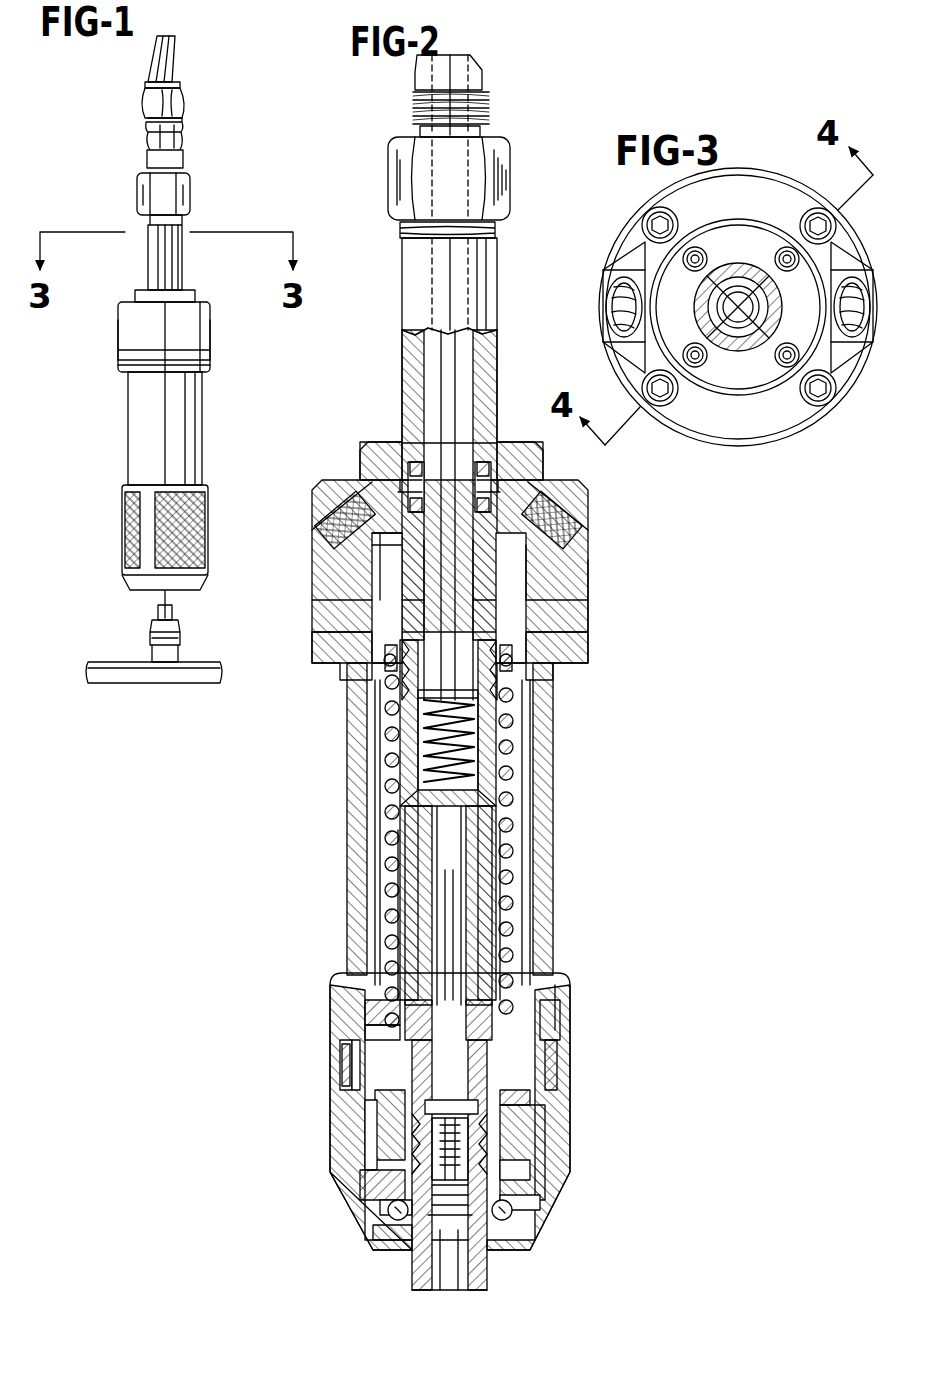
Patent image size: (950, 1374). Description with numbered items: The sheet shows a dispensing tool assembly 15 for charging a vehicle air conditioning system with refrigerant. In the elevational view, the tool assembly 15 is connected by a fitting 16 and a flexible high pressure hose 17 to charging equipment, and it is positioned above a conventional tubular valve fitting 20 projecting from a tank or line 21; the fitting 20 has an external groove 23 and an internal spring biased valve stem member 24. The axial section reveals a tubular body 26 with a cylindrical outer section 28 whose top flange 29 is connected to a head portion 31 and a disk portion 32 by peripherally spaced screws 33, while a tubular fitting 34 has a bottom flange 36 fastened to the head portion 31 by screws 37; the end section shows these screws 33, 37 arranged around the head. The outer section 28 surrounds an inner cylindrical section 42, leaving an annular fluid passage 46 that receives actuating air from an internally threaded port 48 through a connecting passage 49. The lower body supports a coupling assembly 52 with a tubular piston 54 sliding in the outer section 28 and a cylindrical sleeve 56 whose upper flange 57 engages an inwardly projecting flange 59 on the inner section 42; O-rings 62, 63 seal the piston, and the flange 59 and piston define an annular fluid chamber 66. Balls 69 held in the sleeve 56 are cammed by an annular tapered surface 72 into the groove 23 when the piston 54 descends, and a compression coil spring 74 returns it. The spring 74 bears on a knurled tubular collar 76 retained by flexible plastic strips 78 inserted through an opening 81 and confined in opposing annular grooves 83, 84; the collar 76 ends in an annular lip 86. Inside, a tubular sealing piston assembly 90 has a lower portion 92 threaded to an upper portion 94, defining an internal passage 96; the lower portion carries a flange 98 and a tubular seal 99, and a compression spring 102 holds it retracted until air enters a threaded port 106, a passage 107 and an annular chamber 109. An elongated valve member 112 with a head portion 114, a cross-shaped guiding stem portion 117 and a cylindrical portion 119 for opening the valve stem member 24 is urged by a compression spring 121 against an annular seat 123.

In FIG. 1, the dispensing tool assembly 15 is at (240, 366).
In FIG. 1, the fitting 16 is at (148, 101).
In FIG. 1, the flexible high pressure hose 17 is at (160, 58).
In FIG. 1, the tubular valve fitting 20 is at (150, 620).
In FIG. 2, the tubular valve fitting 20 is at (488, 1291).
In FIG. 1, the tank or line 21 is at (205, 668).
In FIG. 1, the external groove 23 is at (152, 641).
In FIG. 2, the external groove 23 is at (488, 1260).
In FIG. 2, the valve stem member 24 is at (460, 1152).
In FIG. 1, the tubular body 26 is at (215, 361).
In FIG. 2, the tubular body 26 is at (595, 617).
In FIG. 1, the outer cylindrical section 28 is at (132, 437).
In FIG. 2, the outer cylindrical section 28 is at (553, 821).
In FIG. 1, the top flange 29 is at (132, 366).
In FIG. 2, the top flange 29 is at (590, 661).
In FIG. 1, the head portion 31 is at (125, 318).
In FIG. 2, the head portion 31 is at (580, 549).
In FIG. 3, the head portion 31 is at (640, 244).
In FIG. 1, the disk portion 32 is at (128, 352).
In FIG. 2, the disk portion 32 is at (585, 631).
In FIG. 3, the screws 33 is at (792, 222).
In FIG. 1, the tubular fitting 34 is at (148, 240).
In FIG. 2, the tubular fitting 34 is at (404, 340).
In FIG. 3, the tubular fitting 34 is at (715, 316).
In FIG. 1, the bottom flange 36 is at (140, 292).
In FIG. 2, the bottom flange 36 is at (372, 442).
In FIG. 3, the bottom flange 36 is at (640, 381).
In FIG. 3, the screws 37 is at (776, 258).
In FIG. 2, the inner cylindrical section 42 is at (528, 754).
In FIG. 2, the annular fluid passage 46 is at (535, 902).
In FIG. 2, the internally threaded port 48 is at (352, 500).
In FIG. 3, the internally threaded port 48 is at (606, 292).
In FIG. 2, the connecting passage 49 is at (400, 576).
In FIG. 2, the coupling assembly 52 is at (580, 1171).
In FIG. 2, the tubular piston 54 is at (520, 1171).
In FIG. 2, the cylindrical sleeve 56 is at (520, 1201).
In FIG. 2, the upper flange 57 is at (385, 1031).
In FIG. 2, the inwardly projecting flange 59 is at (360, 1031).
In FIG. 2, the O-ring 62 is at (380, 1096).
In FIG. 2, the O-ring 63 is at (365, 1116).
In FIG. 2, the annular fluid chamber 66 is at (345, 1071).
In FIG. 2, the balls 69 is at (508, 1216).
In FIG. 2, the annular tapered surface 72 is at (395, 1201).
In FIG. 2, the compression coil spring 74 is at (365, 1191).
In FIG. 1, the tubular collar 76 is at (122, 516).
In FIG. 2, the tubular collar 76 is at (330, 1149).
In FIG. 2, the flexible plastic strips 78 is at (560, 1051).
In FIG. 2, the opening 81 is at (562, 1021).
In FIG. 2, the annular groove 83 is at (556, 986).
In FIG. 2, the annular groove 84 is at (350, 1081).
In FIG. 2, the annular lip 86 is at (392, 1241).
In FIG. 2, the tubular sealing piston assembly 90 is at (507, 860).
In FIG. 2, the tubular lower portion 92 is at (400, 942).
In FIG. 2, the tubular upper portion 94 is at (425, 601).
In FIG. 3, the tubular upper portion 94 is at (722, 305).
In FIG. 2, the internal passage 96 is at (385, 662).
In FIG. 2, the flange 98 is at (545, 691).
In FIG. 2, the tubular seal 99 is at (410, 1003).
In FIG. 2, the compression spring 102 is at (396, 882).
In FIG. 2, the threaded port 106 is at (575, 513).
In FIG. 3, the threaded port 106 is at (868, 277).
In FIG. 2, the passage 107 is at (545, 566).
In FIG. 2, the annular chamber 109 is at (398, 543).
In FIG. 2, the elongated valve member 112 is at (465, 940).
In FIG. 2, the head portion 114 is at (484, 802).
In FIG. 2, the guiding stem portion 117 is at (440, 852).
In FIG. 2, the cylindrical portion 119 is at (527, 1101).
In FIG. 2, the compression spring 121 is at (425, 724).
In FIG. 2, the annular seat 123 is at (398, 824).